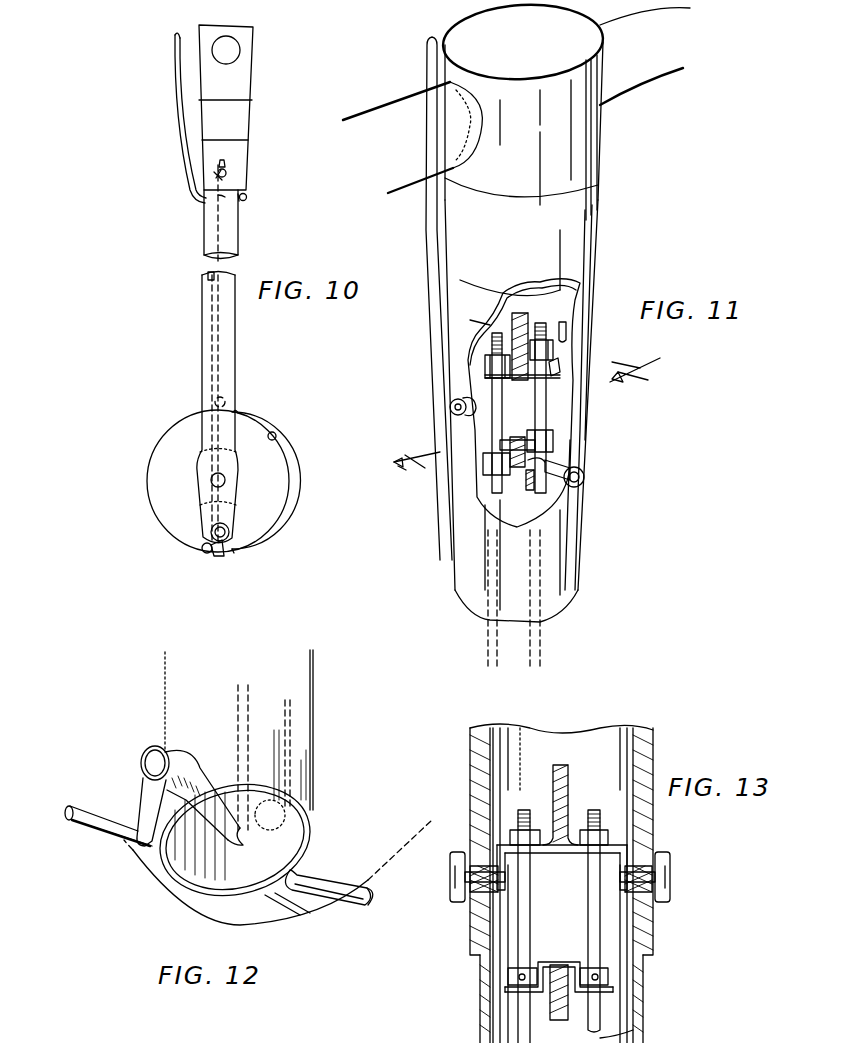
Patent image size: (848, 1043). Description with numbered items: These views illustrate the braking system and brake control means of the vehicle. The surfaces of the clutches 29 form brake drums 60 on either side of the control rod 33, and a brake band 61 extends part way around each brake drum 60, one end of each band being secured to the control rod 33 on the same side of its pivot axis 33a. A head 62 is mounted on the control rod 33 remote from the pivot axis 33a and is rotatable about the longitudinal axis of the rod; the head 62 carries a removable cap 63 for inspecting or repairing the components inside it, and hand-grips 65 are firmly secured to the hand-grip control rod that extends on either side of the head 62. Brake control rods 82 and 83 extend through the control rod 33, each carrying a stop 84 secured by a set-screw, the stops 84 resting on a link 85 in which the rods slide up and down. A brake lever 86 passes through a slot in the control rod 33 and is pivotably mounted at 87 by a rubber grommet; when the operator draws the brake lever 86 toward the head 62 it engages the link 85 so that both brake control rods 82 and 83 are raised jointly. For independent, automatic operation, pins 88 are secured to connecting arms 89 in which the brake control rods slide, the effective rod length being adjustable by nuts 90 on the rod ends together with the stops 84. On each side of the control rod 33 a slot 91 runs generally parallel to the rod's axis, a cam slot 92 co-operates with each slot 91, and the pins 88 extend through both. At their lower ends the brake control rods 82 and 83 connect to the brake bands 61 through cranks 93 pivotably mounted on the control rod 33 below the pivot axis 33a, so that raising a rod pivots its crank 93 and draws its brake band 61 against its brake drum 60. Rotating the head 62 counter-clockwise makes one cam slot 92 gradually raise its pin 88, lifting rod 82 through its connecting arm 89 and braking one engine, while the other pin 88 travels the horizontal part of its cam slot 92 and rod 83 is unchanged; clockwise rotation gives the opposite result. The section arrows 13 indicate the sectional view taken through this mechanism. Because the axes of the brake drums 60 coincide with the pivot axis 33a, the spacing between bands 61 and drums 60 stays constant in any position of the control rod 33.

In FIG. 11, the section line of FIG. 13 is at (527, 421).
In FIG. 10, the clutch 29 is at (180, 428).
In FIG. 12, the clutch 29 is at (228, 888).
In FIG. 10, the control rod 33 is at (228, 230).
In FIG. 11, the control rod 33 is at (562, 556).
In FIG. 12, the control rod 33 is at (180, 680).
In FIG. 13, the control rod 33 is at (643, 1005).
In FIG. 10, the pivot axis 33a is at (222, 484).
In FIG. 10, the brake drum 60 is at (275, 432).
In FIG. 12, the brake drum 60 is at (375, 870).
In FIG. 10, the brake band 61 is at (290, 470).
In FIG. 12, the brake band 61 is at (328, 915).
In FIG. 10, the head 62 is at (229, 117).
In FIG. 11, the head 62 is at (577, 165).
In FIG. 13, the head 62 is at (653, 757).
In FIG. 11, the cap 63 is at (478, 27).
In FIG. 10, the hand-grip 65 is at (233, 50).
In FIG. 11, the hand-grip 65 is at (400, 118).
In FIG. 10, the brake control rod 82 is at (212, 338).
In FIG. 11, the brake control rod 82 is at (493, 498).
In FIG. 12, the brake control rod 82 is at (238, 720).
In FIG. 13, the brake control rod 82 is at (524, 943).
In FIG. 11, the brake control rod 83 is at (548, 497).
In FIG. 12, the brake control rod 83 is at (290, 720).
In FIG. 13, the brake control rod 83 is at (594, 910).
In FIG. 11, the stop 84 is at (490, 470).
In FIG. 13, the stop 84 is at (508, 975).
In FIG. 11, the link 85 is at (517, 445).
In FIG. 13, the link 85 is at (545, 1000).
In FIG. 10, the brake lever 86 is at (178, 115).
In FIG. 11, the brake lever 86 is at (425, 228).
In FIG. 13, the brake lever 86 is at (558, 1008).
In FIG. 10, the pivot mounting 87 is at (245, 197).
In FIG. 11, the pivot mounting 87 is at (580, 470).
In FIG. 10, the pin 88 is at (222, 175).
In FIG. 11, the pin 88 is at (452, 408).
In FIG. 13, the pin 88 is at (470, 878).
In FIG. 11, the connecting arm 89 is at (495, 330).
In FIG. 13, the connecting arm 89 is at (553, 772).
In FIG. 11, the nut 90 is at (495, 370).
In FIG. 13, the nut 90 is at (518, 838).
In FIG. 11, the slot 91 is at (565, 333).
In FIG. 13, the slot 91 is at (497, 853).
In FIG. 10, the cam slot 92 is at (215, 172).
In FIG. 11, the cam slot 92 is at (462, 398).
In FIG. 13, the cam slot 92 is at (478, 893).
In FIG. 10, the crank 93 is at (214, 553).
In FIG. 12, the crank 93 is at (145, 805).